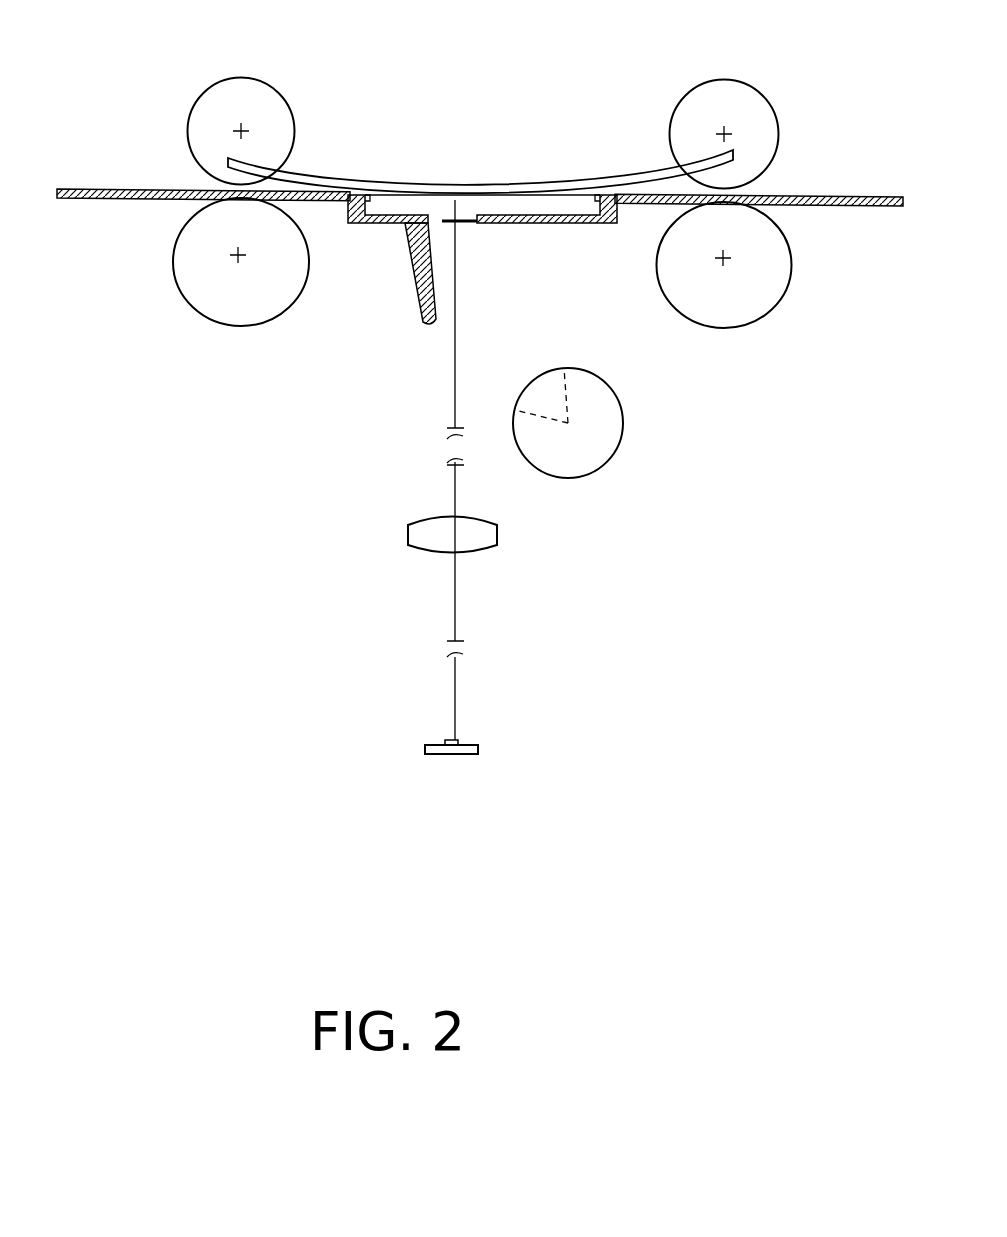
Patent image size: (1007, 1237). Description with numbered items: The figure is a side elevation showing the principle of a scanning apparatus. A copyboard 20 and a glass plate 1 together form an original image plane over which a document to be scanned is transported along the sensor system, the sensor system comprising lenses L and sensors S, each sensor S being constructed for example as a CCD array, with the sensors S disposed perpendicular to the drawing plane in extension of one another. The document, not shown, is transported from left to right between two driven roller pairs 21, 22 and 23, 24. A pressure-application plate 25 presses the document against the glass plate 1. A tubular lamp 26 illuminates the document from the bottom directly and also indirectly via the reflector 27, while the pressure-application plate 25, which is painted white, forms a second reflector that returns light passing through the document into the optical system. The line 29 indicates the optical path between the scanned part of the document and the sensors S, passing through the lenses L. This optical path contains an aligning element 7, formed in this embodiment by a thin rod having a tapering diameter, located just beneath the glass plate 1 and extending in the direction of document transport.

The glass plate 1 is at (533, 207).
The aligning element 7 is at (463, 223).
The copyboard 20 is at (83, 190).
The driven roller 21 is at (283, 92).
The driven roller 22 is at (277, 315).
The driven roller 23 is at (772, 102).
The driven roller 24 is at (763, 315).
The pressure-application plate 25 is at (617, 177).
The tubular lamp 26 is at (602, 467).
The reflector 27 is at (434, 322).
The line indicating optical path 29 is at (457, 345).
The lenses L is at (480, 550).
The sensors S is at (458, 738).